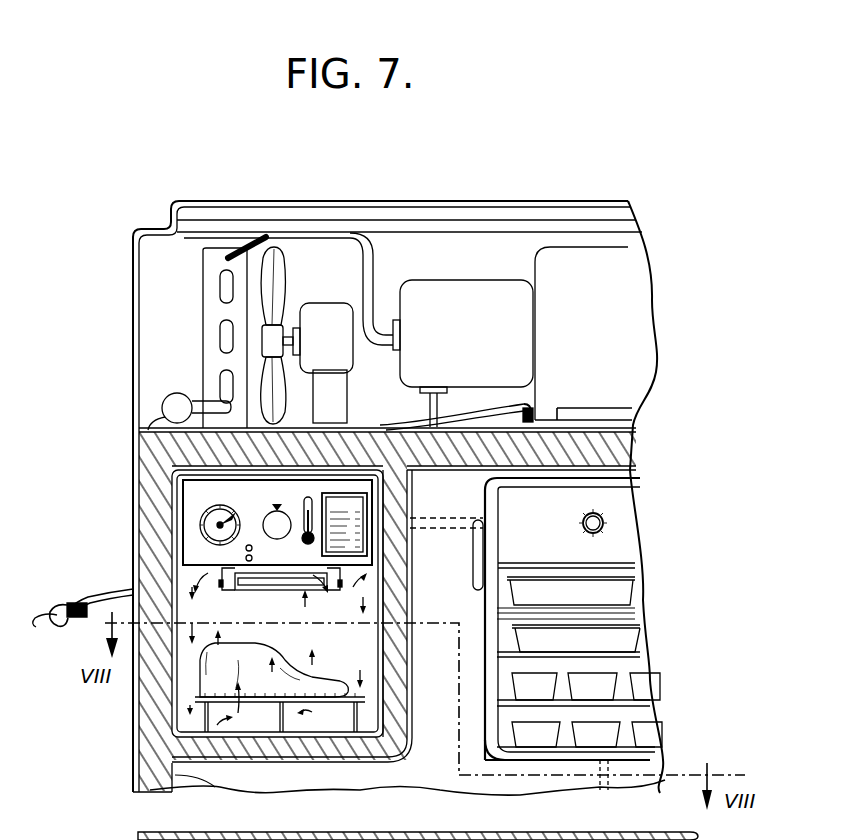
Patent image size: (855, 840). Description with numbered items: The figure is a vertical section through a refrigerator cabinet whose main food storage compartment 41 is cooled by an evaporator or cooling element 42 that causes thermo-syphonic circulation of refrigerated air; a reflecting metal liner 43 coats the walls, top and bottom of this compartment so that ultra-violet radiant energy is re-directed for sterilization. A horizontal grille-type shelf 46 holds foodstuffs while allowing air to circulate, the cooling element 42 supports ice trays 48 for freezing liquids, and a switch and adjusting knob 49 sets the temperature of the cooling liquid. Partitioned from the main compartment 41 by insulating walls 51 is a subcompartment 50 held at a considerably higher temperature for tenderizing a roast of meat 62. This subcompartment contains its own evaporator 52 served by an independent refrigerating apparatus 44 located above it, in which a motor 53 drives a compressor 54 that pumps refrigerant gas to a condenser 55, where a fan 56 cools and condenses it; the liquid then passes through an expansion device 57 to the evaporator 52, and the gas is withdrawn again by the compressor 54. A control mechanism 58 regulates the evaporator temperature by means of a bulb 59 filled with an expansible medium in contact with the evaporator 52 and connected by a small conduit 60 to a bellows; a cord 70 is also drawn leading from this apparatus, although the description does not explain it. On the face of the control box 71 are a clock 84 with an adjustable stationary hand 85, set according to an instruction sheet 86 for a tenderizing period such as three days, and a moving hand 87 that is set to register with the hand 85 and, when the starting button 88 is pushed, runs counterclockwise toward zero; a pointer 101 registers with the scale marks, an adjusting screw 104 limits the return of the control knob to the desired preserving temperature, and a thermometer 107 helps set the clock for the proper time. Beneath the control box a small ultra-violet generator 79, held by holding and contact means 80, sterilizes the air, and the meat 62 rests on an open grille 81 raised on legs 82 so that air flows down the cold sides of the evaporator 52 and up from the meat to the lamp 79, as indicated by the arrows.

The food storage compartment 41 is at (190, 785).
The cooling element 42 is at (653, 752).
The metal liner 43 is at (238, 782).
The refrigerating apparatus 44 is at (127, 366).
The shelf 46 is at (507, 833).
The ice trays 48 is at (653, 723).
The adjusting knob 49 is at (600, 525).
The subcompartment 50 is at (173, 715).
The insulating walls 51 is at (405, 727).
The evaporator 52 is at (180, 533).
The motor 53 is at (642, 288).
The compressor 54 is at (468, 291).
The condenser 55 is at (212, 270).
The fan 56 is at (280, 275).
The expansion device 57 is at (176, 400).
The control mechanism 58 is at (400, 503).
The bulb 59 is at (367, 608).
The conduit 60 is at (378, 573).
The roast of meat 62 is at (240, 663).
The electric cord 70 is at (470, 423).
The control box 71 is at (197, 487).
The ultra-violet generator 79 is at (242, 587).
The holding and contact means 80 is at (222, 592).
The grille 81 is at (257, 700).
The legs 82 is at (283, 715).
The clock 84 is at (200, 500).
The stationary hand 85 is at (218, 527).
The instruction sheet 86 is at (367, 538).
The moving hand 87 is at (233, 517).
The starting button 88 is at (252, 578).
The pointer 101 is at (277, 506).
The adjusting screw 104 is at (263, 512).
The thermometer 107 is at (304, 505).